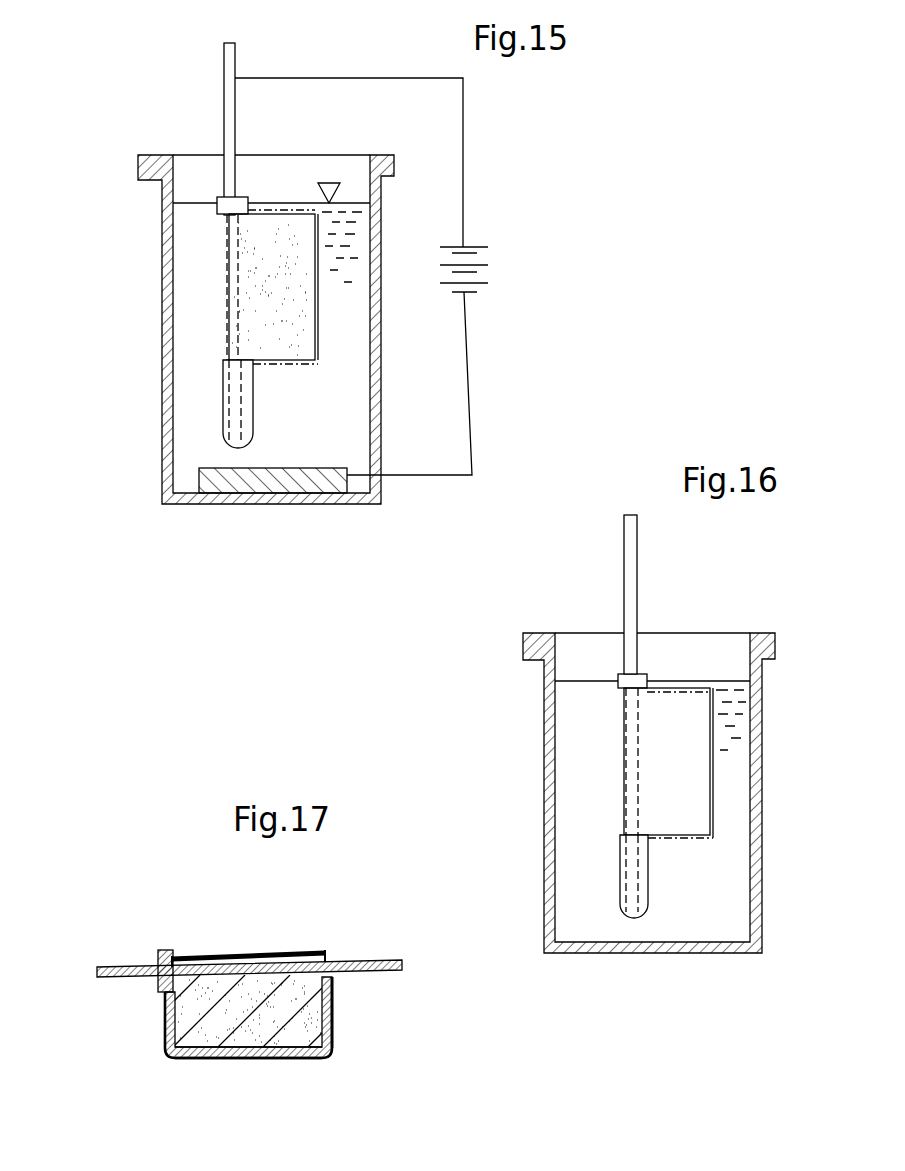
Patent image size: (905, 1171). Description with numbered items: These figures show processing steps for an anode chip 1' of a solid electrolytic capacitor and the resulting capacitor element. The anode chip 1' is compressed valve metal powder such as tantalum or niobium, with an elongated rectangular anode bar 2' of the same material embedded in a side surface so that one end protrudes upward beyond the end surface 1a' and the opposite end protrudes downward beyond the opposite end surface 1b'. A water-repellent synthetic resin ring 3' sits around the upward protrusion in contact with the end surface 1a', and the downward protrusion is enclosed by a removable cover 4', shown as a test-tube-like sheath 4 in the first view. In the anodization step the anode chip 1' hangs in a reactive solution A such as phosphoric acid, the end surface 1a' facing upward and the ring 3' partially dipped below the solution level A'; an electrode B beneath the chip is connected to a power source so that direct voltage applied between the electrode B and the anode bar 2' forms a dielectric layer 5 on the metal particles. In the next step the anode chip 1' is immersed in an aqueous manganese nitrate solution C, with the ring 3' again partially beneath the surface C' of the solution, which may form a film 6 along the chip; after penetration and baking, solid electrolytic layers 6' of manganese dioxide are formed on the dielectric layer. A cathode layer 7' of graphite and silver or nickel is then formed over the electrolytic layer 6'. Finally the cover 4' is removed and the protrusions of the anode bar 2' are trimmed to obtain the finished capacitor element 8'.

In FIG. 15, the reactive solution A is at (230, 329).
In FIG. 15, the solution level A' is at (254, 183).
In FIG. 15, the electrode B is at (258, 472).
In FIG. 16, the aqueous solution of manganese nitrate C is at (612, 793).
In FIG. 16, the surface of the aqueous solution C' is at (622, 623).
In FIG. 15, the anode chip 1' is at (322, 283).
In FIG. 16, the anode chip 1' is at (721, 713).
In FIG. 17, the anode chip 1' is at (246, 1048).
In FIG. 15, the end surface 1a' is at (302, 152).
In FIG. 16, the end surface 1a' is at (700, 630).
In FIG. 17, the end surface 1a' is at (188, 1022).
In FIG. 15, the opposite end surface 1b' is at (346, 372).
In FIG. 16, the opposite end surface 1b' is at (742, 808).
In FIG. 17, the opposite end surface 1b' is at (374, 1022).
In FIG. 15, the anode bar 2' is at (356, 254).
In FIG. 17, the anode bar 2' is at (249, 925).
In FIG. 15, the water-repellent synthetic resin ring 3' is at (159, 235).
In FIG. 16, the water-repellent synthetic resin ring 3' is at (550, 711).
In FIG. 17, the water-repellent synthetic resin ring 3' is at (159, 930).
In FIG. 15, the test tube 4 is at (171, 404).
In FIG. 16, the removable cover 4' is at (558, 881).
In FIG. 15, the coating layer 5 is at (320, 340).
In FIG. 16, the oxide film 6 is at (768, 688).
In FIG. 17, the solid electrolytic layer 6' is at (248, 1101).
In FIG. 17, the cathode layer 7' is at (248, 1095).
In FIG. 17, the capacitor element 8' is at (248, 920).